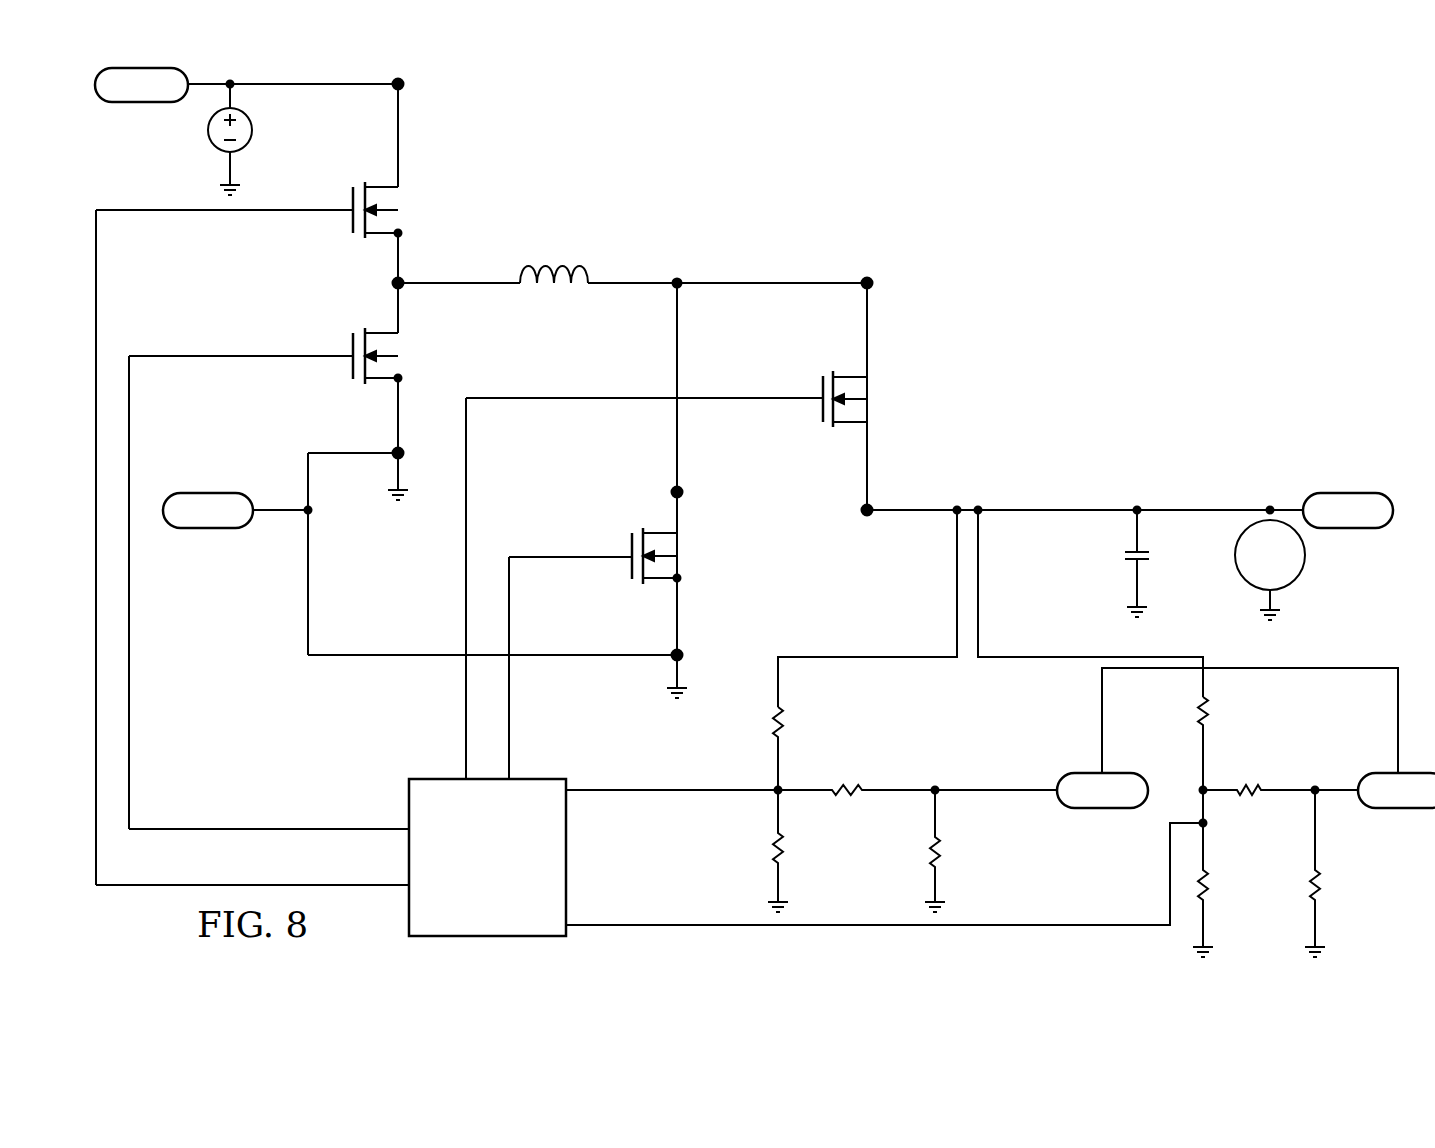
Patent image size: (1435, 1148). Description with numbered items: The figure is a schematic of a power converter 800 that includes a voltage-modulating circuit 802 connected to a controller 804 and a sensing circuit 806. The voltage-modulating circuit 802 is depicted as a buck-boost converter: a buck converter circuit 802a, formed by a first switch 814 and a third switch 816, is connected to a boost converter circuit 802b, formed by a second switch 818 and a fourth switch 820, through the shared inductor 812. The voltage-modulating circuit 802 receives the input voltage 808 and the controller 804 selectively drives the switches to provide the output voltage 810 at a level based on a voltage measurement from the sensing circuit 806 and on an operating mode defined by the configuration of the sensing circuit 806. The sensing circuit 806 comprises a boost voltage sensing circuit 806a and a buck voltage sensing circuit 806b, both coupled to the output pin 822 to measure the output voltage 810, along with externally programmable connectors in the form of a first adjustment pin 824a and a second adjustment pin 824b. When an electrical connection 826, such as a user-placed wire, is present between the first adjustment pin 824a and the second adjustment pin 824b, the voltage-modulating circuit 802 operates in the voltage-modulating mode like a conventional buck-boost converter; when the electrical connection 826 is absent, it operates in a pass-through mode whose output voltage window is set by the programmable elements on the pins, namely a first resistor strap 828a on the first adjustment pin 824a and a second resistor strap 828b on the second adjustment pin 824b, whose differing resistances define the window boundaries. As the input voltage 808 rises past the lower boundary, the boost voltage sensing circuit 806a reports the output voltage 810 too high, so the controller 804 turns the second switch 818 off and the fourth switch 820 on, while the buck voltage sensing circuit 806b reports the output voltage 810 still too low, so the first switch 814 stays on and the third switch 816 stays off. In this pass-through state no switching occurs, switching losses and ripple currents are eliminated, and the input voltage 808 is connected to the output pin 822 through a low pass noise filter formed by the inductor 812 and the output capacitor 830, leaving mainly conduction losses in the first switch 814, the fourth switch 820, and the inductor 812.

The power converter 800 is at (1132, 113).
The voltage-modulating circuit 802 is at (710, 228).
The buck converter circuit 802a is at (465, 201).
The boost converter circuit 802b is at (775, 507).
The controller 804 is at (508, 896).
The sensing circuit 806 is at (1032, 613).
The boost voltage sensing circuit 806a is at (721, 820).
The buck voltage sensing circuit 806b is at (1197, 640).
The VIN 808 is at (311, 71).
The VOUT 810 is at (1192, 481).
The inductor L1 812 is at (526, 263).
The switch S1 814 is at (350, 222).
The switch S3 816 is at (350, 366).
The switch S2 818 is at (630, 566).
The switch S4 820 is at (820, 410).
The output pin PIN7 822 is at (1348, 491).
The first adjustment pin PIN9 824a is at (1115, 812).
The second adjustment pin PIN13 824b is at (1400, 810).
The electrical connection 826 is at (1318, 667).
The resistor strap RS1 828a is at (944, 856).
The resistor strap RS2 828b is at (1322, 888).
The capacitor COUT 830 is at (1125, 553).